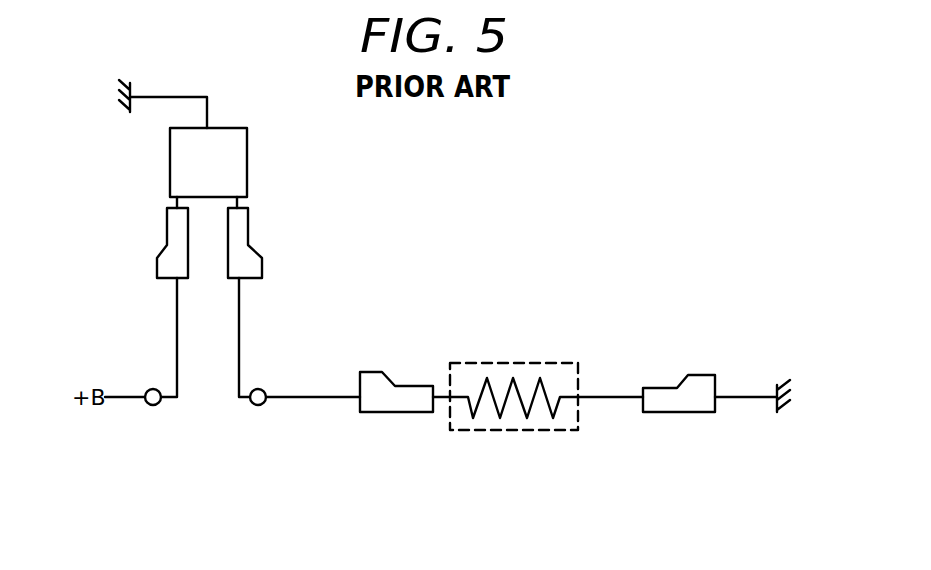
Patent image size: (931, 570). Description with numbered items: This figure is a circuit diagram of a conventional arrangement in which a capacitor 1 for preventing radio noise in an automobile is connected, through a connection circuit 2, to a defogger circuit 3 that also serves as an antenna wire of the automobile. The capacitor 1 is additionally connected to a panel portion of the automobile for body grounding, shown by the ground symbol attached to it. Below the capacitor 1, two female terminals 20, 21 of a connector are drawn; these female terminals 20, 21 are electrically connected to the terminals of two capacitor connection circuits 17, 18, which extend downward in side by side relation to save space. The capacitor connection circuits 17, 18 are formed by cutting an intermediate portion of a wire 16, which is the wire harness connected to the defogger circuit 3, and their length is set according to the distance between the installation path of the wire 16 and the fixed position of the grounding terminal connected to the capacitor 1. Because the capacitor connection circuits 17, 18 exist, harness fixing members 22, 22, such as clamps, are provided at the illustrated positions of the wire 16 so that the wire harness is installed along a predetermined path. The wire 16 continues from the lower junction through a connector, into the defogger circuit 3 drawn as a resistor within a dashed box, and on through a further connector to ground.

The capacitor 1 is at (233, 158).
The connection circuit 2 is at (575, 293).
The defogger circuit 3 is at (452, 350).
The wire 16 is at (300, 400).
The capacitor connection circuit 17 is at (177, 302).
The capacitor connection circuit 18 is at (239, 302).
The female terminal 20 is at (172, 229).
The female terminal 21 is at (240, 229).
The harness fixing member 22 is at (153, 406).